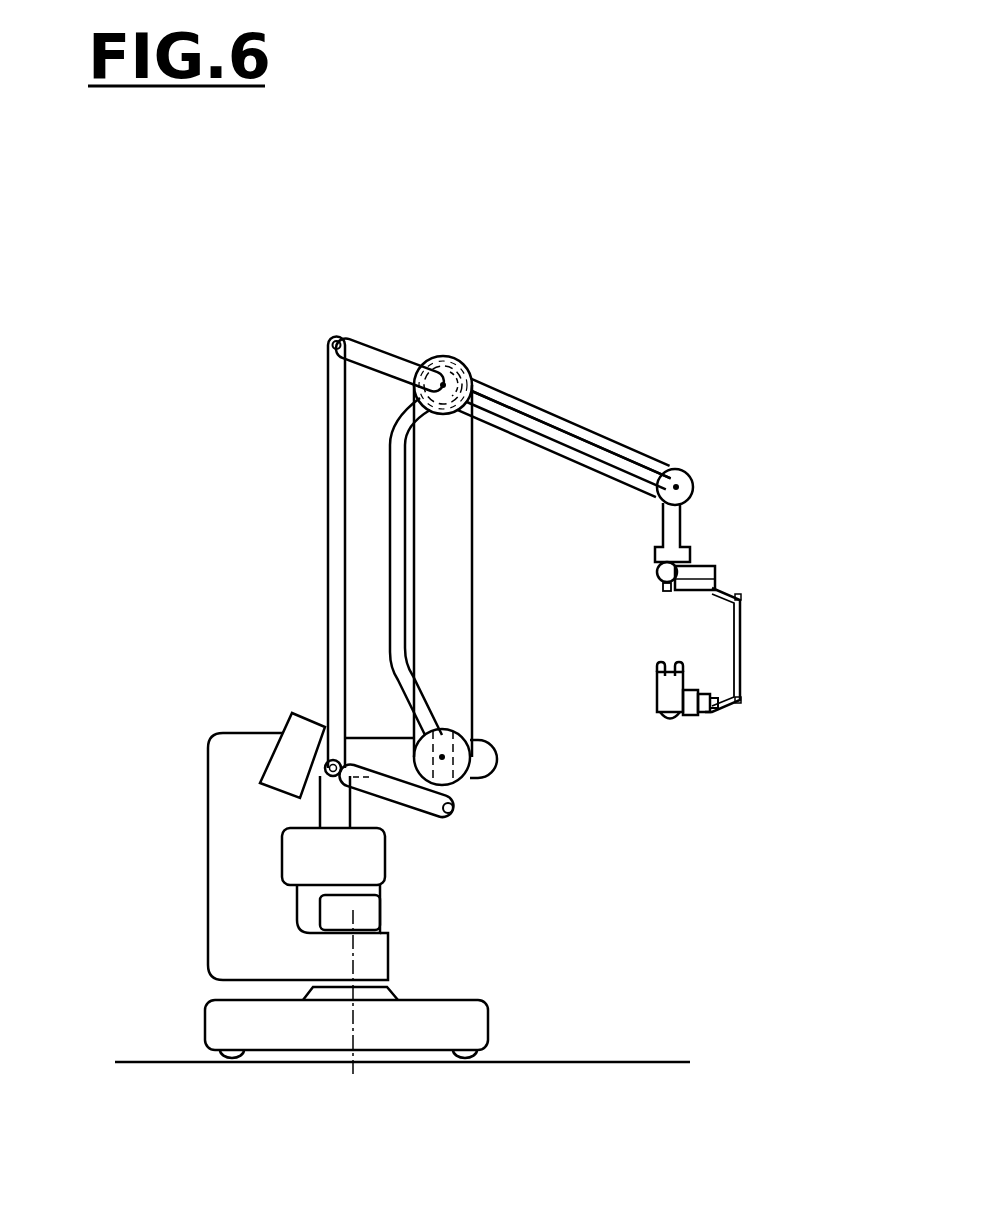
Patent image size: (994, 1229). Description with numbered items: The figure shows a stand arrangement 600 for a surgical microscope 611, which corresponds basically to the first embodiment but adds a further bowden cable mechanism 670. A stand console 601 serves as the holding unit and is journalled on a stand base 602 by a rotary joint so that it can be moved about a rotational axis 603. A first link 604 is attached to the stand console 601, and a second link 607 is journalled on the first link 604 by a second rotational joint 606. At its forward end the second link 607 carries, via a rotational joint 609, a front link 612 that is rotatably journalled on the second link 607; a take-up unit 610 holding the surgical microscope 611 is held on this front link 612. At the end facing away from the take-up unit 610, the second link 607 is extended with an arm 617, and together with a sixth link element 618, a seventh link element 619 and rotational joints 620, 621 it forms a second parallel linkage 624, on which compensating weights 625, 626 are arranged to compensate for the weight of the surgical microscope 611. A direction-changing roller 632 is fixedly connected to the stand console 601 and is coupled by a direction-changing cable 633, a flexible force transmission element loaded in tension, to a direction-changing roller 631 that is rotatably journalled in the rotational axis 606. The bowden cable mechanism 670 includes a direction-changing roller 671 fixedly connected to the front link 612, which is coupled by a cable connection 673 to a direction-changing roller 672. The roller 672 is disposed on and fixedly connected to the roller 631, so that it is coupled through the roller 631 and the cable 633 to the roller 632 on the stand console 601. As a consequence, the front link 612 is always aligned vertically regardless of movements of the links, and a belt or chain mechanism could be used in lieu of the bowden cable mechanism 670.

The stand arrangement 600 is at (138, 594).
The stand console 601 is at (231, 876).
The stand base 602 is at (486, 1034).
The rotational axis 603 is at (355, 958).
The first link 604 is at (398, 576).
The second rotational joint 606 is at (427, 389).
The second link 607 is at (628, 462).
The rotational joint 609 is at (677, 486).
The take-up unit 610 is at (693, 557).
The surgical microscope 611 is at (706, 760).
The front link 612 is at (673, 532).
The arm 617 is at (370, 345).
The sixth link element 618 is at (336, 518).
The seventh link element 619 is at (413, 805).
The rotational joint 620 is at (336, 338).
The rotational joint 621 is at (326, 776).
The second parallel linkage 624 is at (360, 633).
The compensating weight 625 is at (282, 770).
The compensating weight 626 is at (305, 874).
The direction-changing roller 631 is at (436, 356).
The direction-changing roller 632 is at (463, 768).
The direction-changing cable 633 is at (476, 598).
The bowden cable mechanism 670 is at (664, 367).
The direction-changing roller 671 is at (692, 493).
The direction-changing roller 672 is at (446, 356).
The cable connection 673 is at (574, 424).